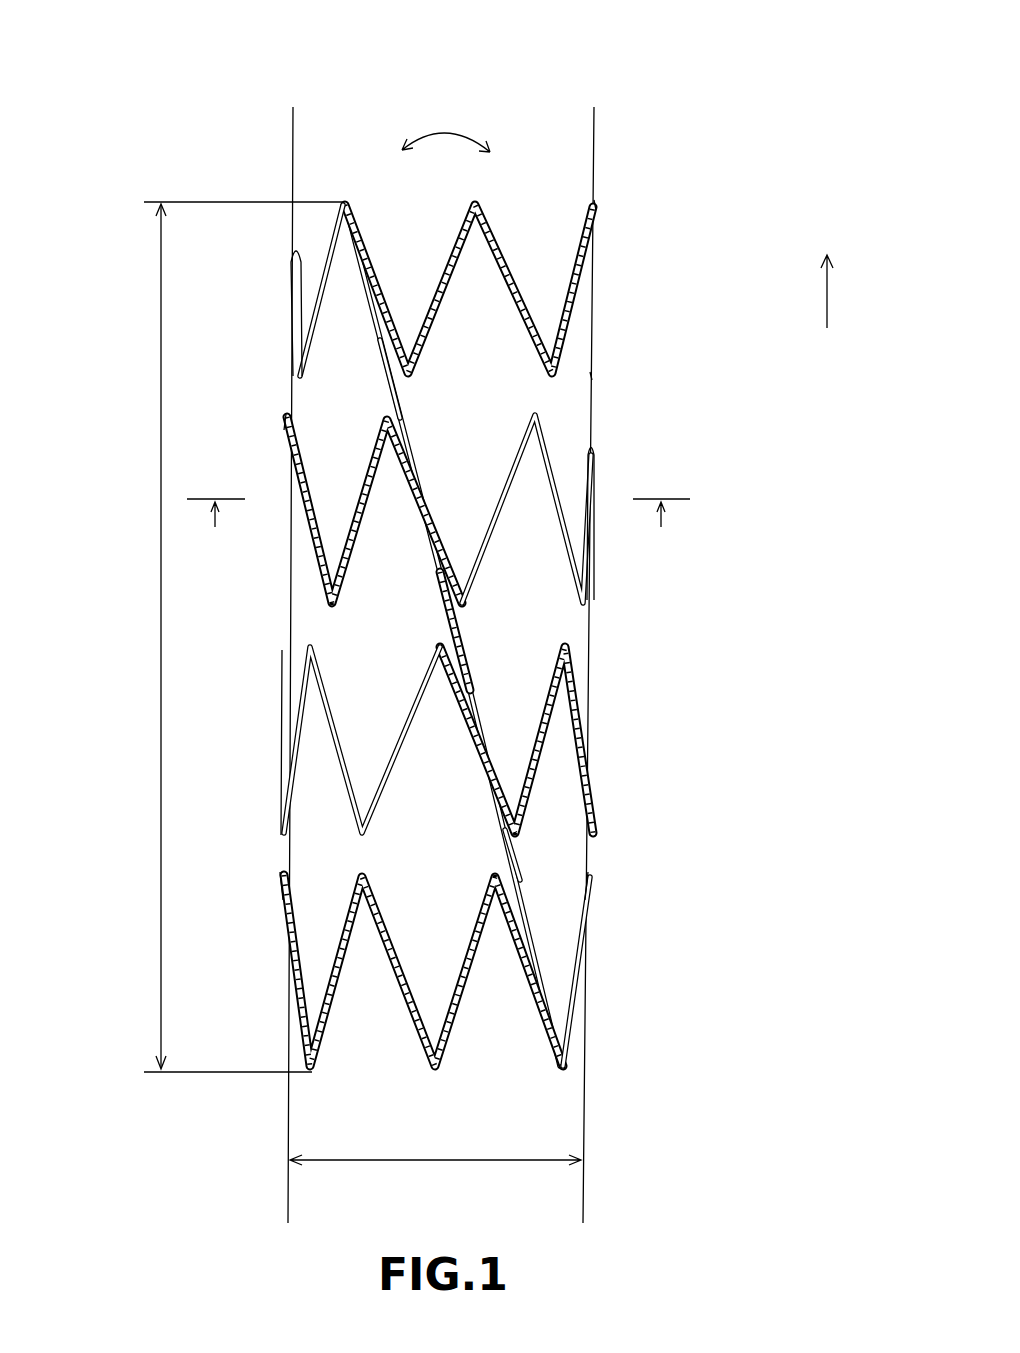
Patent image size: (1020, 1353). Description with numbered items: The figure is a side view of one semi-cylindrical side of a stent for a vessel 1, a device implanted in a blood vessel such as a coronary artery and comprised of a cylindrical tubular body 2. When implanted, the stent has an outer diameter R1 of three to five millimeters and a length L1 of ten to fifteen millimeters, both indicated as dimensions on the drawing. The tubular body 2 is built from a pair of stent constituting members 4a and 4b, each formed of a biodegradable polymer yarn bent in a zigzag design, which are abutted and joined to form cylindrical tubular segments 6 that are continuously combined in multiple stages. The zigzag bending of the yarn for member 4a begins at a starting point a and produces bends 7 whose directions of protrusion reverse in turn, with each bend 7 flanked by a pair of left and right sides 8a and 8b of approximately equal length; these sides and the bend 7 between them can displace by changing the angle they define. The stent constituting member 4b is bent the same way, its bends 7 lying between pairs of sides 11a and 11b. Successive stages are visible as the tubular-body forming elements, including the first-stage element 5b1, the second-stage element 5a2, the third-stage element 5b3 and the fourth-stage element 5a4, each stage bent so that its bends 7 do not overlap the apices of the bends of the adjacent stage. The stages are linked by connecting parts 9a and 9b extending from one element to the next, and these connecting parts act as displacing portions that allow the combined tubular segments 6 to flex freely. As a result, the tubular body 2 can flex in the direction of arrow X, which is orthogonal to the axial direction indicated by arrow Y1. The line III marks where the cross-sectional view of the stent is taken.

The stent for a vessel 1 is at (560, 64).
The tubular body 2 is at (598, 205).
The stent constituting member 4a is at (585, 293).
The stent constituting member 4b is at (285, 320).
The tubular-body forming element of the fourth stage 5a4 is at (580, 360).
The tubular-body forming element of the third stage 5b3 is at (588, 580).
The tubular-body forming element of the second stage 5a2 is at (585, 757).
The tubular-body forming element of the first stage 5b1 is at (585, 990).
The tubular segment 6 is at (290, 272).
The bend 7 is at (480, 205).
The side 8a is at (370, 235).
The side 8b is at (430, 348).
The connecting part 9a is at (465, 622).
The connecting part 9b is at (398, 405).
The side 11a is at (370, 310).
The side 11b is at (505, 520).
The starting point a is at (560, 1070).
The length L1 is at (231, 637).
The outer diameter R1 is at (435, 1146).
The arrow Y1 is at (827, 277).
The arrow X is at (446, 127).
The line III- III is at (438, 527).